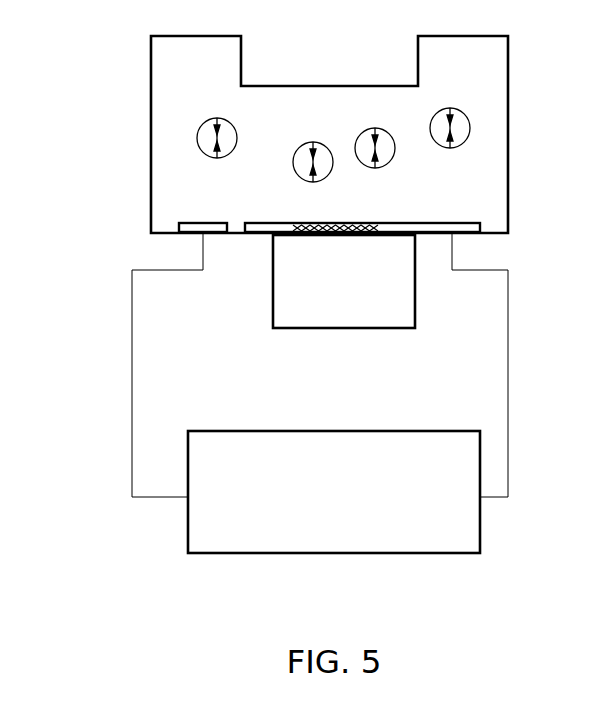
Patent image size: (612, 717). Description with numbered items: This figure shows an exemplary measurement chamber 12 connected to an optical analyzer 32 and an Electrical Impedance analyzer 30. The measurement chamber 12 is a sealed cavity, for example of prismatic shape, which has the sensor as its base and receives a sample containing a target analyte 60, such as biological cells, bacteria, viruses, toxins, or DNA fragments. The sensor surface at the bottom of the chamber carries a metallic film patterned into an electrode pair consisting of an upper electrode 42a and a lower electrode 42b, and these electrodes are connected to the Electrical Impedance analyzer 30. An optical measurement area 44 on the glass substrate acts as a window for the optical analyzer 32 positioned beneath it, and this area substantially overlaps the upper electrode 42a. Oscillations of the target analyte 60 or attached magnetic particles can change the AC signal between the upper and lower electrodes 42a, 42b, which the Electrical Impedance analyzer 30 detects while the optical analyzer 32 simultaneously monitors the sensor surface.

The measurement chamber 12 is at (151, 36).
The target analyte 60 is at (466, 114).
The optical measurement area 44 is at (362, 224).
The upper electrode 42a is at (482, 228).
The lower electrode 42b is at (180, 223).
The optical analyzer 32 is at (273, 328).
The Electrical Impedance analyzer 30 is at (480, 430).